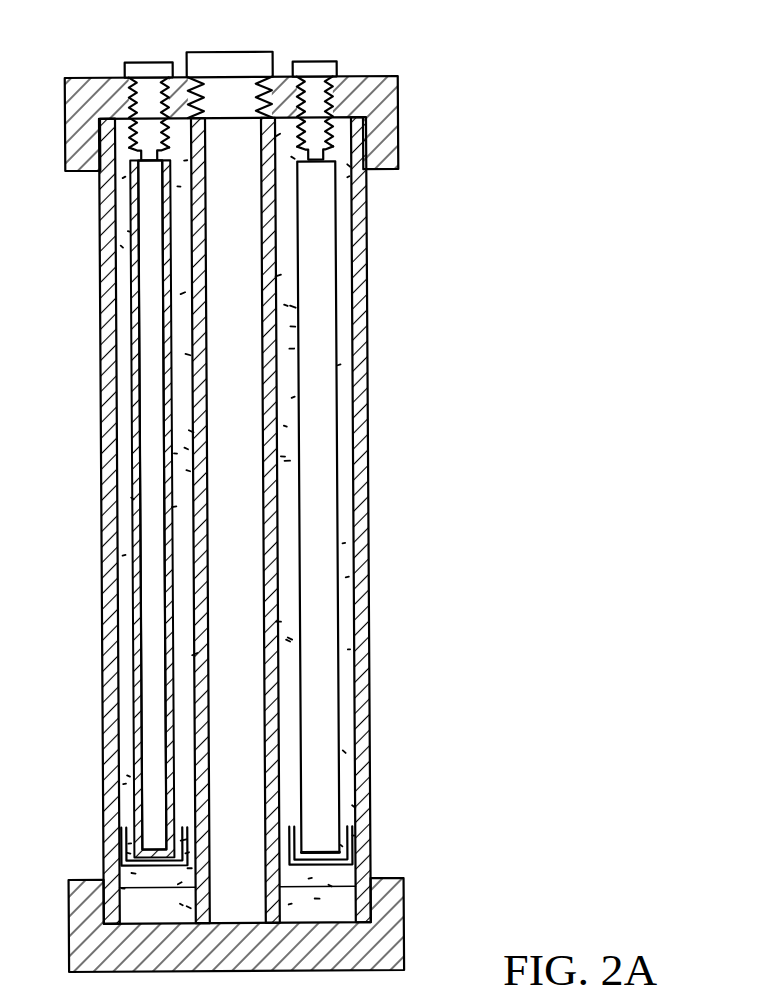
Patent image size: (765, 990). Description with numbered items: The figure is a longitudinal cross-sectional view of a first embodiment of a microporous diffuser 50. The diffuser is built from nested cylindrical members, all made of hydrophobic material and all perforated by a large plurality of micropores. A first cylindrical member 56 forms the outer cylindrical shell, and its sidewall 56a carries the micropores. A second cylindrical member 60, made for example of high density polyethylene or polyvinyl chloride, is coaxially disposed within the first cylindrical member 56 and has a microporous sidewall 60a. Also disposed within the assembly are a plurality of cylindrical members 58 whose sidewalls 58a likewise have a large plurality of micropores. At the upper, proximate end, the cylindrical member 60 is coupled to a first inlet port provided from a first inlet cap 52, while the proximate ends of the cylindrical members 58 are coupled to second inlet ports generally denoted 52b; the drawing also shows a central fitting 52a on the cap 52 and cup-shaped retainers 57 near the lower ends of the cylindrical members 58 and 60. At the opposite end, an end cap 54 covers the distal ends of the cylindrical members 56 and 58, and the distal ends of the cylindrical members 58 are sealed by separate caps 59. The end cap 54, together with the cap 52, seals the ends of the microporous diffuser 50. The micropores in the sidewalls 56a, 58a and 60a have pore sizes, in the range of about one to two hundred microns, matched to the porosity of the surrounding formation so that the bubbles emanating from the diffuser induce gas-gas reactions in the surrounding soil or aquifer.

The microporous diffuser 50 is at (479, 73).
The first inlet cap 52 is at (372, 77).
The threaded plug 52a is at (222, 52).
The second inlet ports 52b is at (147, 61).
The end cap 54 is at (405, 945).
The first cylindrical member 56 is at (241, 520).
The sidewall 56a is at (363, 301).
The cup 57 is at (355, 846).
The cylindrical members 58 is at (106, 508).
The sidewalls 58a is at (135, 664).
The separate caps 59 is at (352, 498).
The second cylindrical member 60 is at (280, 592).
The sidewall 60a is at (280, 653).